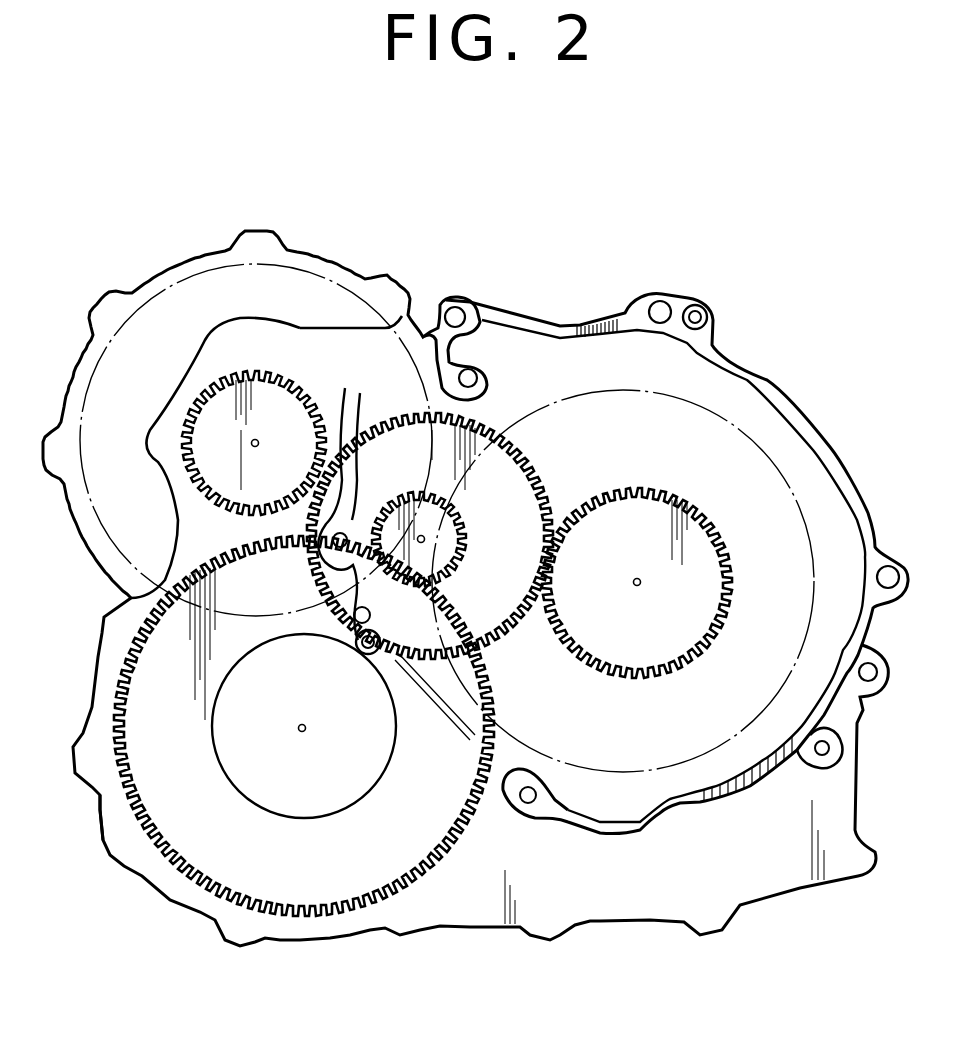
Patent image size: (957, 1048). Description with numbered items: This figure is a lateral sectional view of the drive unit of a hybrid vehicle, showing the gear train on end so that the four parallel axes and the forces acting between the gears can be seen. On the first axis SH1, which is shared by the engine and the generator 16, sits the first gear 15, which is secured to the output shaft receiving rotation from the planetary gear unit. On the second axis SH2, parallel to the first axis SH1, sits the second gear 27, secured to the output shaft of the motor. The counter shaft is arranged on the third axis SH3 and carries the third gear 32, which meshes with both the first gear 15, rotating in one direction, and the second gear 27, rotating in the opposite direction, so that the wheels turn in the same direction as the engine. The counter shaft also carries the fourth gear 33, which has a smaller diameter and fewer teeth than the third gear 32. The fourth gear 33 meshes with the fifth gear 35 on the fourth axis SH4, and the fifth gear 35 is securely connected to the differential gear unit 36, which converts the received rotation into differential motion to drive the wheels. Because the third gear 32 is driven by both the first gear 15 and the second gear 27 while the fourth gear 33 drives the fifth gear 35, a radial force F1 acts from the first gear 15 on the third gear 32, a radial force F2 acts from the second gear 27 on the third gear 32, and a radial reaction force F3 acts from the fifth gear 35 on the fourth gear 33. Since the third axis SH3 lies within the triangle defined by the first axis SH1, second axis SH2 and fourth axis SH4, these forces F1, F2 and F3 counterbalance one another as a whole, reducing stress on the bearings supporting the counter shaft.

The generator 16 is at (336, 274).
The first gear 15 is at (274, 378).
The third gear 32 is at (485, 420).
The fourth gear 33 is at (450, 558).
The second gear 27 is at (696, 650).
The differential gear unit 36 is at (340, 808).
The fifth gear 35 is at (104, 800).
The first axis SH1 is at (251, 444).
The second axis SH2 is at (637, 586).
The third axis SH3 is at (425, 539).
The fourth axis SH4 is at (302, 732).
The radial force F1 is at (306, 473).
The radial force F2 is at (558, 567).
The radial reaction force F3 is at (392, 588).